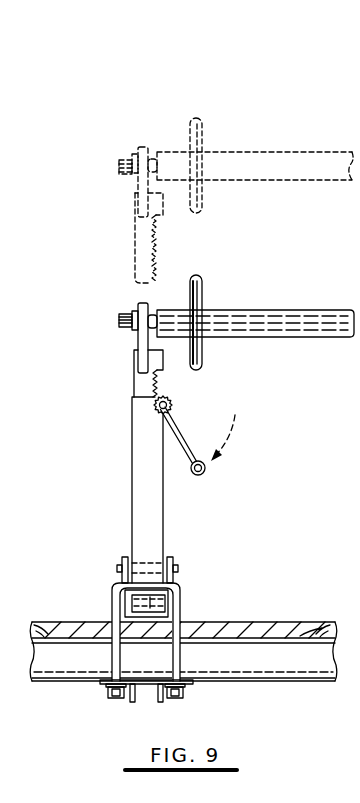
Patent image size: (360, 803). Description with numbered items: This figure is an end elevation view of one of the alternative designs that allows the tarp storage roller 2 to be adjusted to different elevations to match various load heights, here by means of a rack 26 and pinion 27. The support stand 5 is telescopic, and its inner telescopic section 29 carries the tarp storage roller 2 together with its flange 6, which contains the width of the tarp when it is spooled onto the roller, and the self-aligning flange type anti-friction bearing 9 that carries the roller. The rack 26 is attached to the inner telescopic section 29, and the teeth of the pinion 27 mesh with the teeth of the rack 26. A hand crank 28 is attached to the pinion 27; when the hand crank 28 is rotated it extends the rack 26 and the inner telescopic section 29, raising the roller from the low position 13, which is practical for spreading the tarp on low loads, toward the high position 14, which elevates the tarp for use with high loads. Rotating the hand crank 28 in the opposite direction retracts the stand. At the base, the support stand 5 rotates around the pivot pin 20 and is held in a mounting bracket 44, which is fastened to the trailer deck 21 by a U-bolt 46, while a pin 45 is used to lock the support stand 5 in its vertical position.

The tarp storage roller 2 is at (289, 154).
The support stand 5 is at (138, 474).
The flange 6 is at (198, 114).
The flange type anti-friction bearing 9 is at (135, 156).
The low position 13 is at (287, 276).
The high position 14 is at (286, 109).
The pivot pin 20 is at (177, 568).
The trailer deck 21 is at (271, 621).
The rack 26 is at (159, 250).
The pinion 27 is at (175, 403).
The hand crank 28 is at (206, 473).
The inner telescopic section 29 is at (140, 238).
The mounting bracket 44 is at (126, 556).
The pin 45 is at (163, 612).
The U-bolt 46 is at (115, 596).